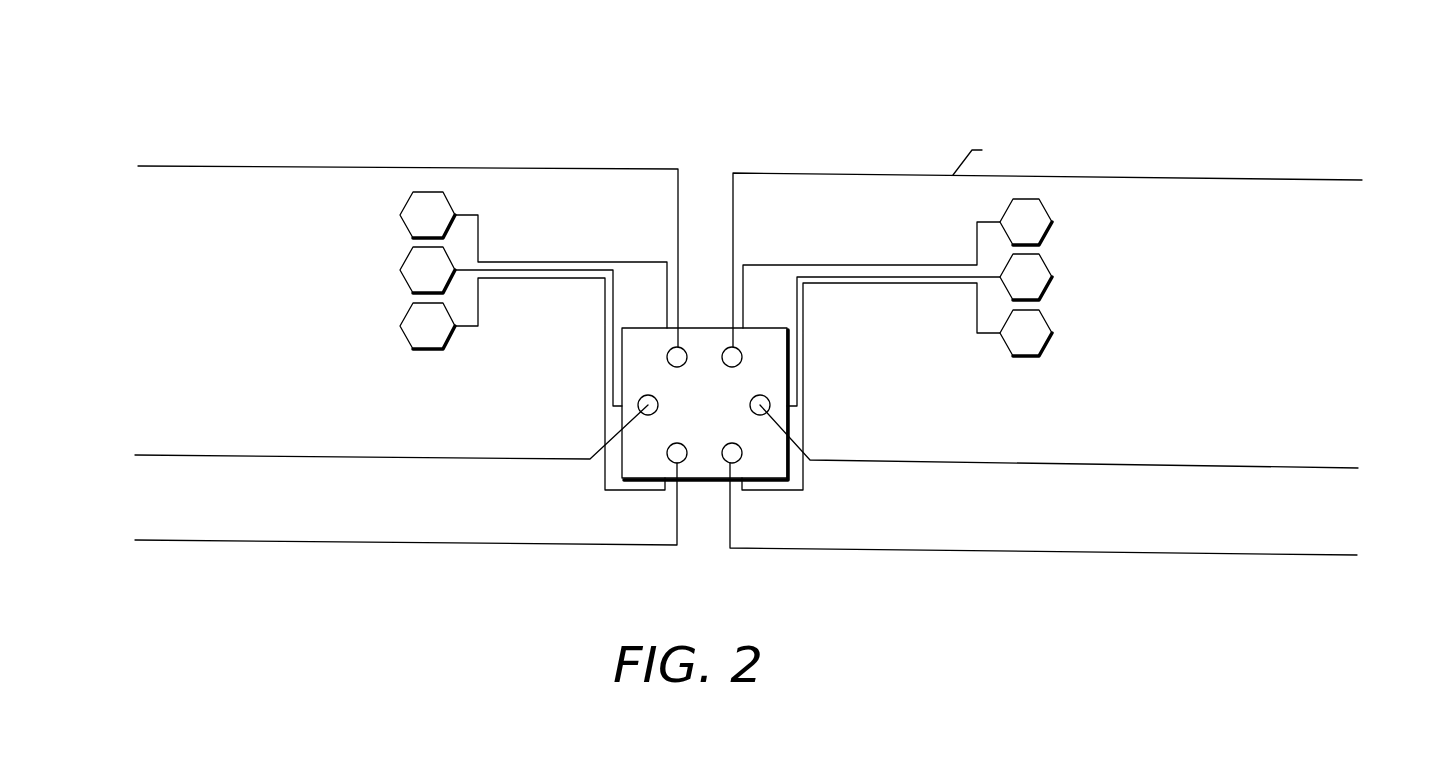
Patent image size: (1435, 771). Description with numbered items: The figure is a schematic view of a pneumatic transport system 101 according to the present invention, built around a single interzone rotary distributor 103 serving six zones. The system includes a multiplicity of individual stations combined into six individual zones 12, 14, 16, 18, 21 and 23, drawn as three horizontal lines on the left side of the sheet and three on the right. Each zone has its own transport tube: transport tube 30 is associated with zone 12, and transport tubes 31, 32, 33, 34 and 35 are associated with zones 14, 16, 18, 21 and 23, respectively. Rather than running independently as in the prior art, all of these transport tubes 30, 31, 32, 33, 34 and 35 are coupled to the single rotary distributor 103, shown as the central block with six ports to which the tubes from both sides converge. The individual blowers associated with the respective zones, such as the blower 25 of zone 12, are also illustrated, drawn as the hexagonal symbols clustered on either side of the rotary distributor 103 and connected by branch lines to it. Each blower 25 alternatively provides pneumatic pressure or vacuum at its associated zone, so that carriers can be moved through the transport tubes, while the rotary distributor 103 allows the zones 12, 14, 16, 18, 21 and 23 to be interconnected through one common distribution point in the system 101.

The zone 12 is at (197, 175).
The zone 14 is at (180, 413).
The zone 16 is at (192, 552).
The zone 18 is at (1412, 122).
The zone 21 is at (1365, 457).
The zone 23 is at (1392, 500).
The blower 25 is at (422, 217).
The transport tube 30 is at (375, 167).
The transport tube 31 is at (373, 457).
The transport tube 32 is at (388, 542).
The transport tube 33 is at (1250, 178).
The transport tube 34 is at (1183, 465).
The transport tube 35 is at (1163, 552).
The system 101 is at (800, 128).
The rotary distributor 103 is at (817, 412).